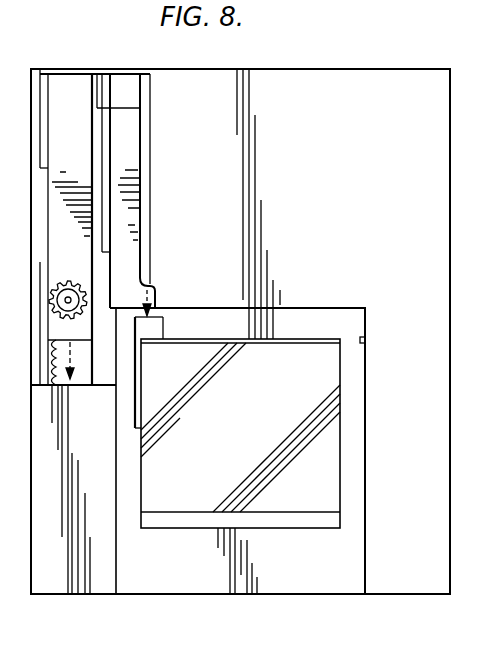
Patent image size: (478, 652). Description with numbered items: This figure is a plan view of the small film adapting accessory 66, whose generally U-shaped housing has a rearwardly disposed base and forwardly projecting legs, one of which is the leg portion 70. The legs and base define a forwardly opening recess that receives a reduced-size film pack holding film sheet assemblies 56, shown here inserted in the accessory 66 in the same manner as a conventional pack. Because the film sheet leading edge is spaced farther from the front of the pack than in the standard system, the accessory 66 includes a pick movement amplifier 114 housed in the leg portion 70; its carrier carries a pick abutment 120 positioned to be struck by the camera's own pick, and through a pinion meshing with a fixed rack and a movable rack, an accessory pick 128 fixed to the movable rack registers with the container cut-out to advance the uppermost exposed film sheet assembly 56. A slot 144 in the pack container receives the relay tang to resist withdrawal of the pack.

The small film adapting accessory 66 is at (299, 65).
The pick abutment 120 is at (65, 74).
The pick movement amplifier 114 is at (112, 217).
The accessory pick 128 is at (143, 270).
The slot 144 is at (366, 340).
The film sheet assembly 56 is at (185, 522).
The leg portion 70 is at (79, 572).